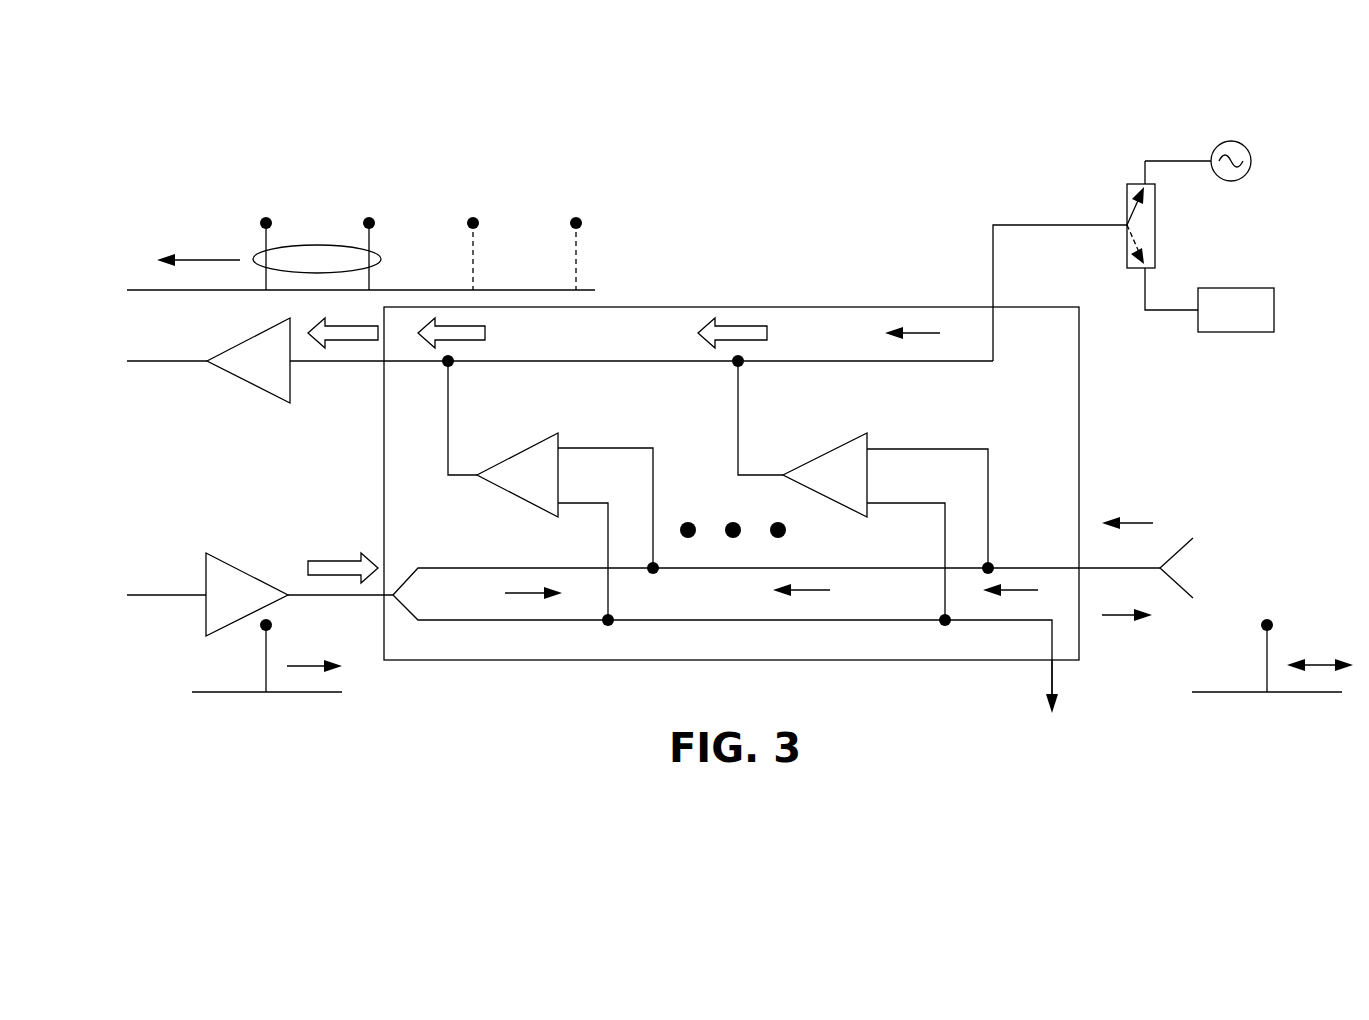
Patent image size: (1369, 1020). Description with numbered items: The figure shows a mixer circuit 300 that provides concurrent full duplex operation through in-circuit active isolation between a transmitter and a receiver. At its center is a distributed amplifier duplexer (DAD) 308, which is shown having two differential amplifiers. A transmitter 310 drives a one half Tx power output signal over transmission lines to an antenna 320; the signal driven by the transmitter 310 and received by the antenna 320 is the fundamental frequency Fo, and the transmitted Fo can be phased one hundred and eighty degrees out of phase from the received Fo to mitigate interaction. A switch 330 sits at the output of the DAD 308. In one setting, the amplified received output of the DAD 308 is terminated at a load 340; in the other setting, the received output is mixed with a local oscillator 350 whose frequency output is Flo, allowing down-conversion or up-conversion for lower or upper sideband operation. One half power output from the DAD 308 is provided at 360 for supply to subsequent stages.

The mixer circuit 300 is at (132, 140).
The distributed amplifier duplexer (DAD) 308 is at (818, 307).
The transmitter 310 is at (248, 570).
The antenna 320 is at (1185, 546).
The switch 330 is at (1126, 201).
The load 340 is at (1275, 310).
The local oscillator 350 is at (1232, 141).
The one half power output 360 is at (1050, 690).